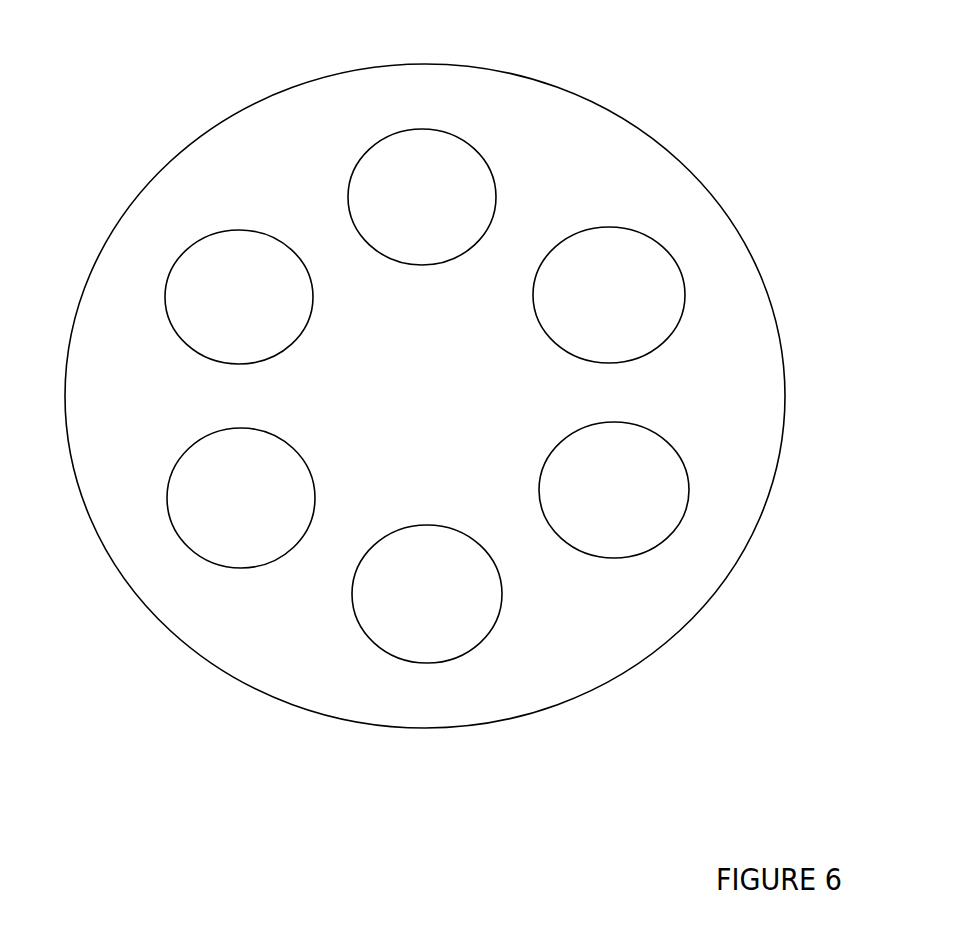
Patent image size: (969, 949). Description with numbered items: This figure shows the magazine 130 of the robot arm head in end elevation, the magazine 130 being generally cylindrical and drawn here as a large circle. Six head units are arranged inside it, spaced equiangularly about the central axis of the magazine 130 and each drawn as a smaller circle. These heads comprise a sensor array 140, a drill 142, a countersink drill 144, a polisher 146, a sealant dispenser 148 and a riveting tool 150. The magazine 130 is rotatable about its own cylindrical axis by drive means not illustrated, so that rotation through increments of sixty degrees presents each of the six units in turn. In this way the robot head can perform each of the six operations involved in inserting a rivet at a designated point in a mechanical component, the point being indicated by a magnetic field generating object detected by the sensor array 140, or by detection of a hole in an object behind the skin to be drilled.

The magazine 130 is at (257, 153).
The sensor array 140 is at (418, 170).
The drill 142 is at (592, 318).
The countersink drill 144 is at (595, 477).
The polisher 146 is at (412, 604).
The sealant dispenser 148 is at (223, 477).
The riveting tool 150 is at (207, 292).